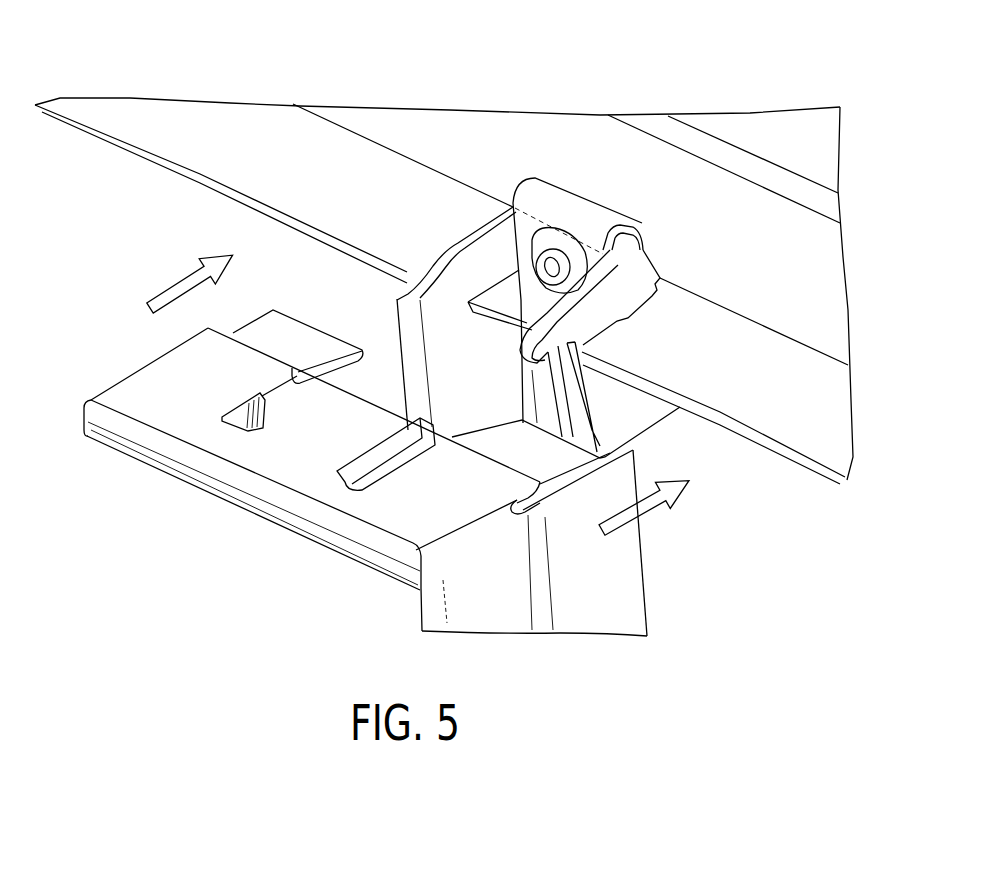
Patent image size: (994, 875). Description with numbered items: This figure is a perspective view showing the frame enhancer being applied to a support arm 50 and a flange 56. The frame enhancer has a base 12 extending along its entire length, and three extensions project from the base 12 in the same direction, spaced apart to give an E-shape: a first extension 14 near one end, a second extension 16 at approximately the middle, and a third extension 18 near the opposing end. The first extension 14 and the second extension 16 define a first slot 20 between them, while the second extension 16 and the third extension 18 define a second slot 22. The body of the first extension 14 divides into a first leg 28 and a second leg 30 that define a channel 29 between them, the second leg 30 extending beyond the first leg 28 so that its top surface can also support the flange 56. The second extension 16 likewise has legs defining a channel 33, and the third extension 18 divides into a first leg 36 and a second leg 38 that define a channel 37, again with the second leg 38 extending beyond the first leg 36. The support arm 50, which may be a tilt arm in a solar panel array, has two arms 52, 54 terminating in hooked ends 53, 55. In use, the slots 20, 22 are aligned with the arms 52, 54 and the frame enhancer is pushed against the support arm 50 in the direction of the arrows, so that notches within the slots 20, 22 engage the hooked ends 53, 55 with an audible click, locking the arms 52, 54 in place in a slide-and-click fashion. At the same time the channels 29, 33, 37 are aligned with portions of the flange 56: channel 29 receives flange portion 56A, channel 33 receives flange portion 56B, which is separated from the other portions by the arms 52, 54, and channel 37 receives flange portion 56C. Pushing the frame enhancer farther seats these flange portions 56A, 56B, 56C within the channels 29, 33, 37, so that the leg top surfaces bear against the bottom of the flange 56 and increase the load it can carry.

The base 12 is at (405, 517).
The first extension 14 is at (456, 548).
The second extension 16 is at (308, 437).
The third extension 18 is at (140, 381).
The first slot 20 is at (312, 497).
The second slot 22 is at (223, 425).
The first leg 28 is at (477, 485).
The channel 29 is at (527, 507).
The second leg 30 is at (556, 465).
The channel 33 is at (400, 450).
The first leg 36 is at (173, 364).
The channel 37 is at (280, 390).
The second leg 38 is at (300, 340).
The support arm 50 is at (633, 617).
The arm 52 is at (623, 563).
The hooked end 53 is at (586, 258).
The arm 54 is at (457, 267).
The hooked end 55 is at (407, 272).
The flange 56 is at (837, 410).
The flange portion 56A is at (688, 337).
The flange portion 56B is at (522, 298).
The flange portion 56C is at (343, 197).